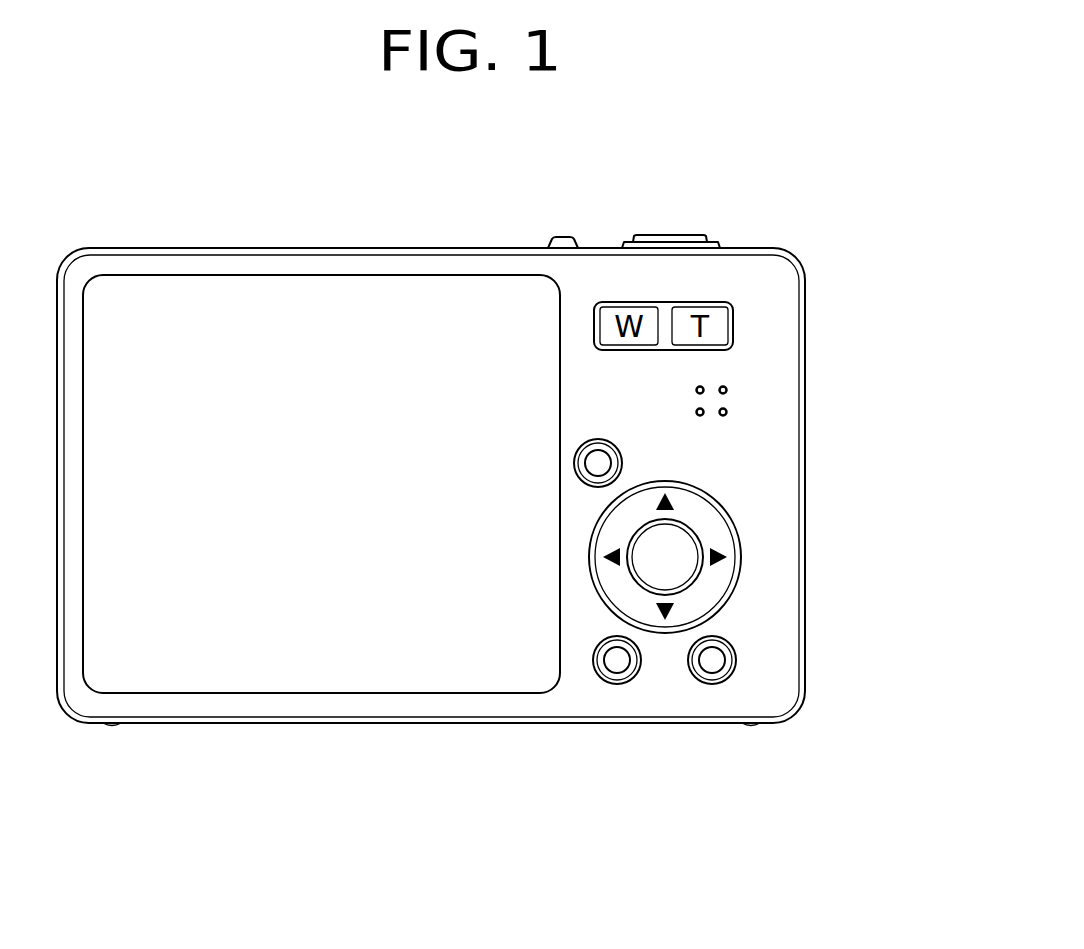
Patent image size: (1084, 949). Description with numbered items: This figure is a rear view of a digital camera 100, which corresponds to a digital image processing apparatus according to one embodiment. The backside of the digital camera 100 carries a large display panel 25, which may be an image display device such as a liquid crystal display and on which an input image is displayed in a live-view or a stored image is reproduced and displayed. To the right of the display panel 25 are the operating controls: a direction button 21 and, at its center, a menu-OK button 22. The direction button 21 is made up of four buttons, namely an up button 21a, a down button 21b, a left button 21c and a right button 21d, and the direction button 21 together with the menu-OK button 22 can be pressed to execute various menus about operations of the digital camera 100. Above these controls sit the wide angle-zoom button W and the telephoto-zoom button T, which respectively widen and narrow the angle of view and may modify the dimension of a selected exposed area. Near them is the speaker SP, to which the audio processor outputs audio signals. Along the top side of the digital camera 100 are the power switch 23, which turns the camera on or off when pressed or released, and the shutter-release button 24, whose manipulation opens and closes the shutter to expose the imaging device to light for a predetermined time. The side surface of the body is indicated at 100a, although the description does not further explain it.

The digital camera 100 is at (808, 212).
The side surface of camera body 100a is at (805, 490).
The display panel 25 is at (315, 680).
The power switch 23 is at (563, 237).
The shutter-release button 24 is at (670, 235).
The speaker SP is at (723, 390).
The direction button 21 is at (685, 610).
The up button 21a is at (667, 493).
The down button 21b is at (665, 615).
The left button 21c is at (603, 557).
The right button 21d is at (727, 557).
The menu-OK button 22 is at (660, 540).